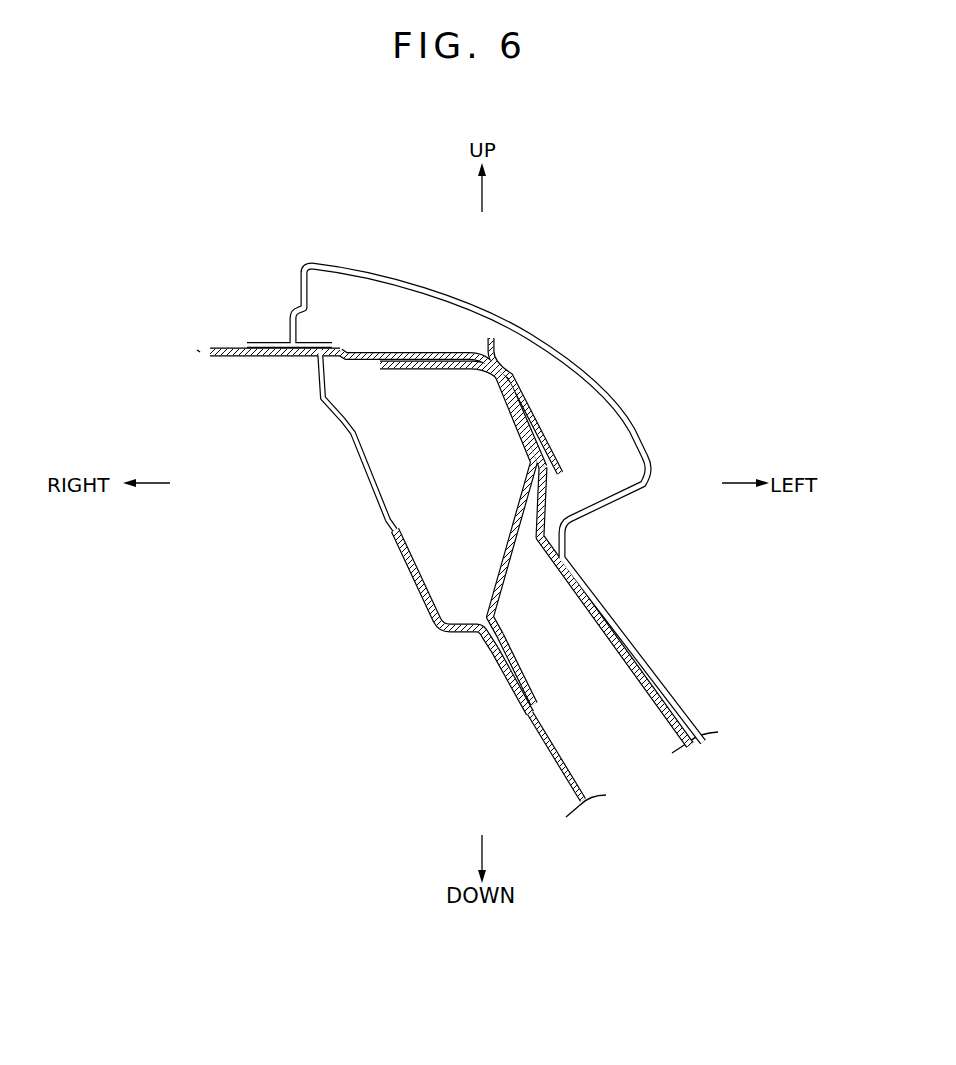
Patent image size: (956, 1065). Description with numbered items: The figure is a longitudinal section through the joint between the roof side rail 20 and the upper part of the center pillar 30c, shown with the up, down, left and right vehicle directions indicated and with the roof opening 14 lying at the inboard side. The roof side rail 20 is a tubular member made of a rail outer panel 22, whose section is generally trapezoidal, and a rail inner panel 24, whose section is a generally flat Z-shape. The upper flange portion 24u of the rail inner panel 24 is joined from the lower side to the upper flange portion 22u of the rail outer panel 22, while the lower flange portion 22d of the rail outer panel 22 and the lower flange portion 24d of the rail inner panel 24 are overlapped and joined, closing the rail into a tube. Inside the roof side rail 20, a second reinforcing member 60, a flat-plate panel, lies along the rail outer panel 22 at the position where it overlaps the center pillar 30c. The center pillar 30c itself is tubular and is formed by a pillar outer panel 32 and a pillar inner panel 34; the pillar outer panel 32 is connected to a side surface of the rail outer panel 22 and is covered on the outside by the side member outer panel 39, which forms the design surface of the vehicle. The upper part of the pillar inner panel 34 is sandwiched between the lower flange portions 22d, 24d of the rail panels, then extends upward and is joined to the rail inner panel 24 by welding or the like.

The roof opening 14 is at (197, 350).
The roof side rail 20 is at (397, 338).
The rail outer panel 22 is at (430, 352).
The upper flange portion of the rail outer panel 22u is at (230, 360).
The lower flange portion of the rail outer panel 22d is at (523, 677).
The rail inner panel 24 is at (368, 492).
The upper flange portion of the rail inner panel 24u is at (313, 360).
The lower flange portion of the rail inner panel 24d is at (503, 693).
The center pillar 30c is at (632, 623).
The pillar outer panel 32 is at (557, 443).
The pillar inner panel 34 is at (553, 763).
The side member outer panel 39 is at (555, 337).
The second reinforcing member 60 is at (510, 423).